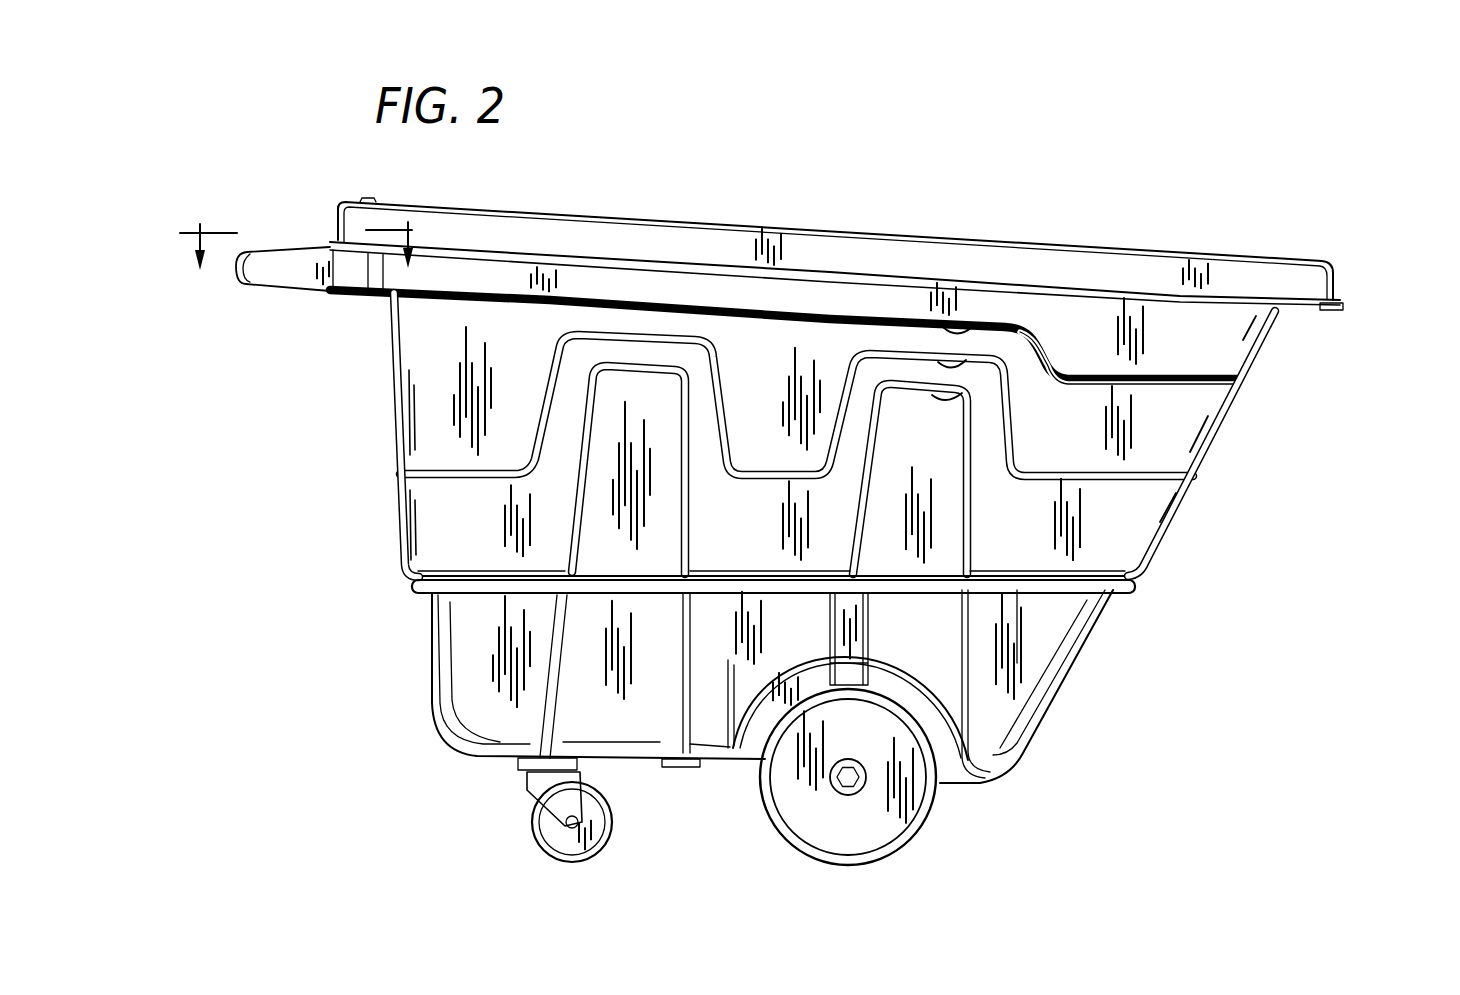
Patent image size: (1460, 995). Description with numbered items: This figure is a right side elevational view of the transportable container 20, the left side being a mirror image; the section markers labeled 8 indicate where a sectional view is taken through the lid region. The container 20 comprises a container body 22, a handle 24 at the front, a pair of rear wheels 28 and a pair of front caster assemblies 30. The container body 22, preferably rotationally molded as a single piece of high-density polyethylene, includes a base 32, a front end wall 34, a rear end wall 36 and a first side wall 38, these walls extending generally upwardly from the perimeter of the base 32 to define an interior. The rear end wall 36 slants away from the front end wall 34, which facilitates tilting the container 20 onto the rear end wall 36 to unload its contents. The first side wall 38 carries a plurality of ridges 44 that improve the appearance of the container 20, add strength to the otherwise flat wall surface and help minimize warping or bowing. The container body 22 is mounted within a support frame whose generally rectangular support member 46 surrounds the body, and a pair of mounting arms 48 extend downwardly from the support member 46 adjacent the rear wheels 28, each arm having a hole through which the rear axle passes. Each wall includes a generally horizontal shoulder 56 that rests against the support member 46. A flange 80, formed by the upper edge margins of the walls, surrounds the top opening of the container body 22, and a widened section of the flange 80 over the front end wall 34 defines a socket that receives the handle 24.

The section line 8- 8 is at (306, 235).
The transportable container 20 is at (1246, 196).
The container body 22 is at (914, 224).
The handle 24 is at (289, 294).
The rear wheels 28 is at (765, 820).
The front caster assemblies 30 is at (524, 810).
The base 32 is at (650, 763).
The front end wall 34 is at (396, 410).
The rear end wall 36 is at (1222, 430).
The first side wall 38 is at (757, 360).
The ridges 44 is at (965, 397).
The support member 46 is at (472, 590).
The mounting arms 48 is at (861, 620).
The shoulder 56 is at (410, 582).
The flange 80 is at (1340, 283).